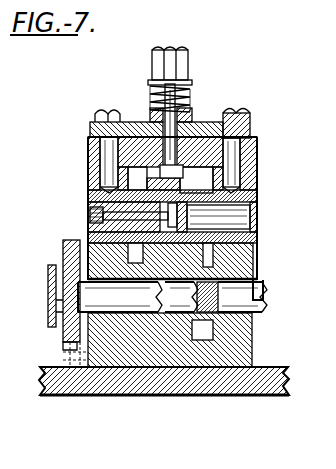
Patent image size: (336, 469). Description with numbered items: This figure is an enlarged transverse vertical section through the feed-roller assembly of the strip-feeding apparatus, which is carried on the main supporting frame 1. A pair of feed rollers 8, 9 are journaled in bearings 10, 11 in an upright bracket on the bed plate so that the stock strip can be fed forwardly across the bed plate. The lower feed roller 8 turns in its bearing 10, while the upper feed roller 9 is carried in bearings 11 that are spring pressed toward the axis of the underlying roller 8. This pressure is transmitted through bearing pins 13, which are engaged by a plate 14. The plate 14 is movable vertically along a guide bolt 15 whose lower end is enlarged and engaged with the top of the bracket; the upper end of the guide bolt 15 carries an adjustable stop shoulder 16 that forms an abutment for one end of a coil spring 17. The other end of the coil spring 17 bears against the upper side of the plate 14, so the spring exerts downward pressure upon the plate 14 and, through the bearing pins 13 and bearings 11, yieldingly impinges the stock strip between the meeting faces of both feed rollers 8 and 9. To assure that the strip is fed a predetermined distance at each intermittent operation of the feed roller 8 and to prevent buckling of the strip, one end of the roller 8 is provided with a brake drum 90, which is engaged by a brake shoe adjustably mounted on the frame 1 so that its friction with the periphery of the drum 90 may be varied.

The main supporting frame 1 is at (252, 396).
The feed roller 8 is at (170, 48).
The feed roller 9 is at (235, 106).
The bearing 10 is at (252, 326).
The bearing 11 is at (90, 196).
The bearing pin 13 is at (100, 165).
The plate 14 is at (250, 131).
The guide bolt 15 is at (192, 113).
The adjustable stop shoulder 16 is at (188, 79).
The coil spring 17 is at (150, 94).
The brake drum 90 is at (66, 256).